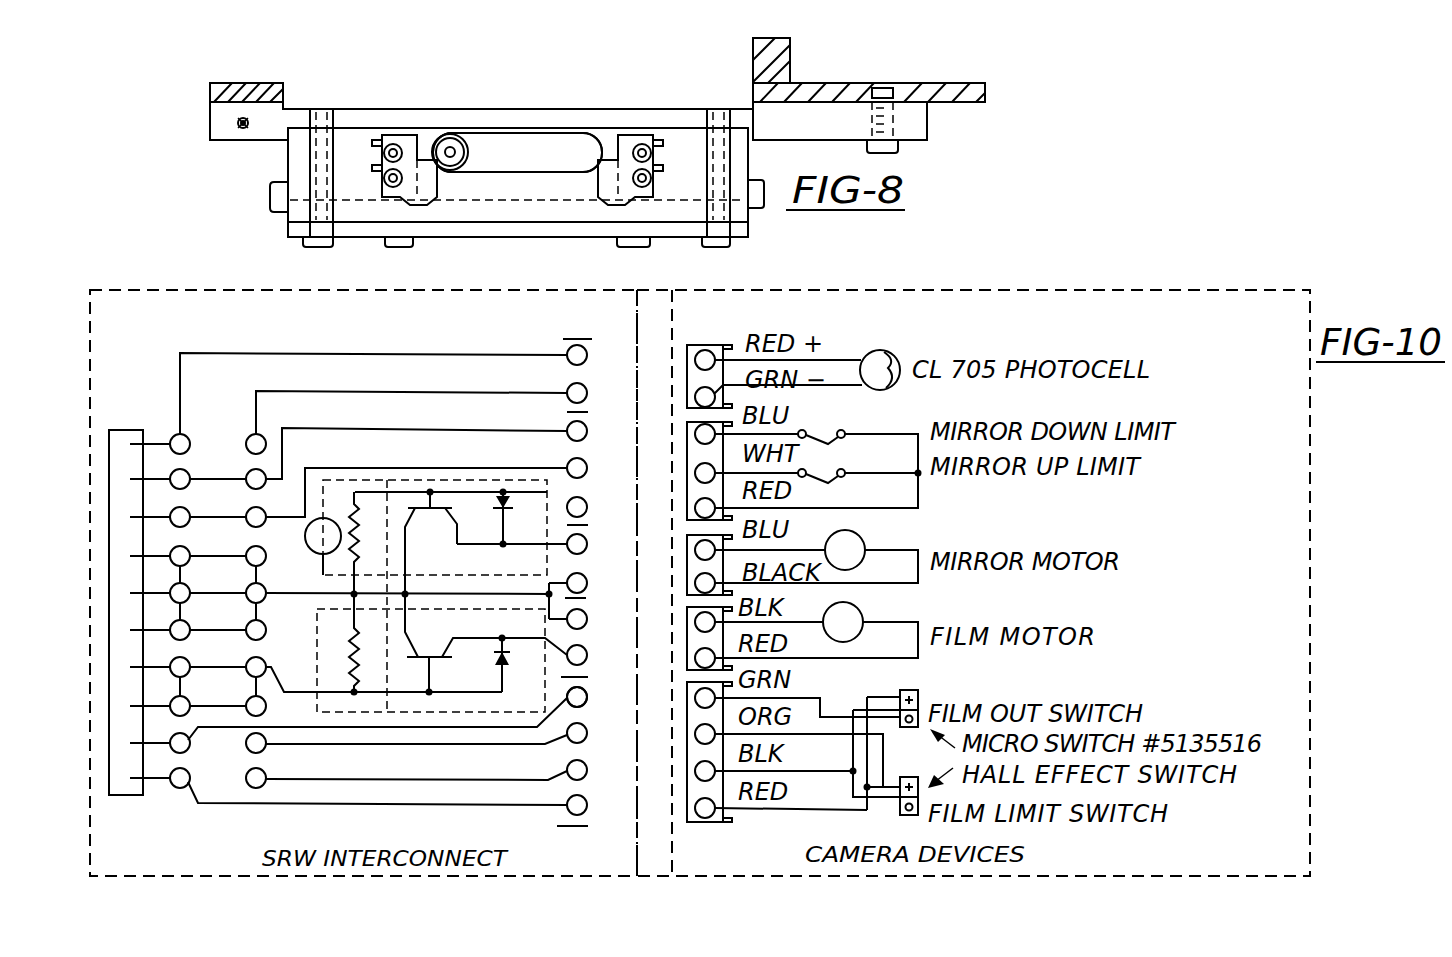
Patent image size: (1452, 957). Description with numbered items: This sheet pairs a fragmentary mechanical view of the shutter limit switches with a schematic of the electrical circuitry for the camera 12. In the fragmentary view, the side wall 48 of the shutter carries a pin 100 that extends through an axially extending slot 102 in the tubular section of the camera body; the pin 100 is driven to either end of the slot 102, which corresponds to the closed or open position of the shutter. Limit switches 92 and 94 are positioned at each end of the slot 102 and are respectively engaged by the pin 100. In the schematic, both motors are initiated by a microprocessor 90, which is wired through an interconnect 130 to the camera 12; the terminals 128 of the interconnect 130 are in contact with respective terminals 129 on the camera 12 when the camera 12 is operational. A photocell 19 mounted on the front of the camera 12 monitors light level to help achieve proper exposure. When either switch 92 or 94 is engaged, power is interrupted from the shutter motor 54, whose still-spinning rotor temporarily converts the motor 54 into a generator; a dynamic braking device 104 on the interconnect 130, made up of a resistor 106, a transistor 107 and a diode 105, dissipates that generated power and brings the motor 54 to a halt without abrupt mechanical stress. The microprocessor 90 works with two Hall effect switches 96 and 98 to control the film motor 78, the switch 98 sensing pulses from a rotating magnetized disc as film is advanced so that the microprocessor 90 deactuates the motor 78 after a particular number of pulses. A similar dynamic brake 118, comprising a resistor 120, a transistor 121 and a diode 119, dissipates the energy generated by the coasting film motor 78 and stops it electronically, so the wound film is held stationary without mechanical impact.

In FIG. 10, the camera 12 is at (1272, 832).
In FIG. 10, the photocell 19 is at (895, 351).
In FIG. 8, the side wall 48 is at (536, 165).
In FIG. 10, the shutter motor 54 is at (858, 540).
In FIG. 10, the film motor 78 is at (855, 612).
In FIG. 10, the microprocessor 90 is at (124, 432).
In FIG. 8, the limit switch 92 is at (432, 200).
In FIG. 10, the limit switch 92 is at (843, 429).
In FIG. 8, the limit switch 94 is at (600, 198).
In FIG. 10, the limit switch 94 is at (839, 470).
In FIG. 10, the Hall effect switch 96 is at (918, 700).
In FIG. 10, the Hall effect switch 98 is at (900, 812).
In FIG. 8, the pin 100 is at (456, 150).
In FIG. 8, the axially extending slot 102 is at (570, 133).
In FIG. 10, the dynamic braking device 104 is at (447, 480).
In FIG. 10, the diode 105 is at (516, 500).
In FIG. 10, the resistor 106 is at (333, 519).
In FIG. 10, the transistor 107 is at (449, 530).
In FIG. 10, the dynamic brake 118 is at (553, 697).
In FIG. 10, the diode 119 is at (490, 660).
In FIG. 10, the resistor 120 is at (350, 640).
In FIG. 10, the transistor 121 is at (413, 662).
In FIG. 10, the terminals 128 is at (578, 336).
In FIG. 10, the terminals 129 is at (704, 340).
In FIG. 10, the interconnect 130 is at (195, 318).